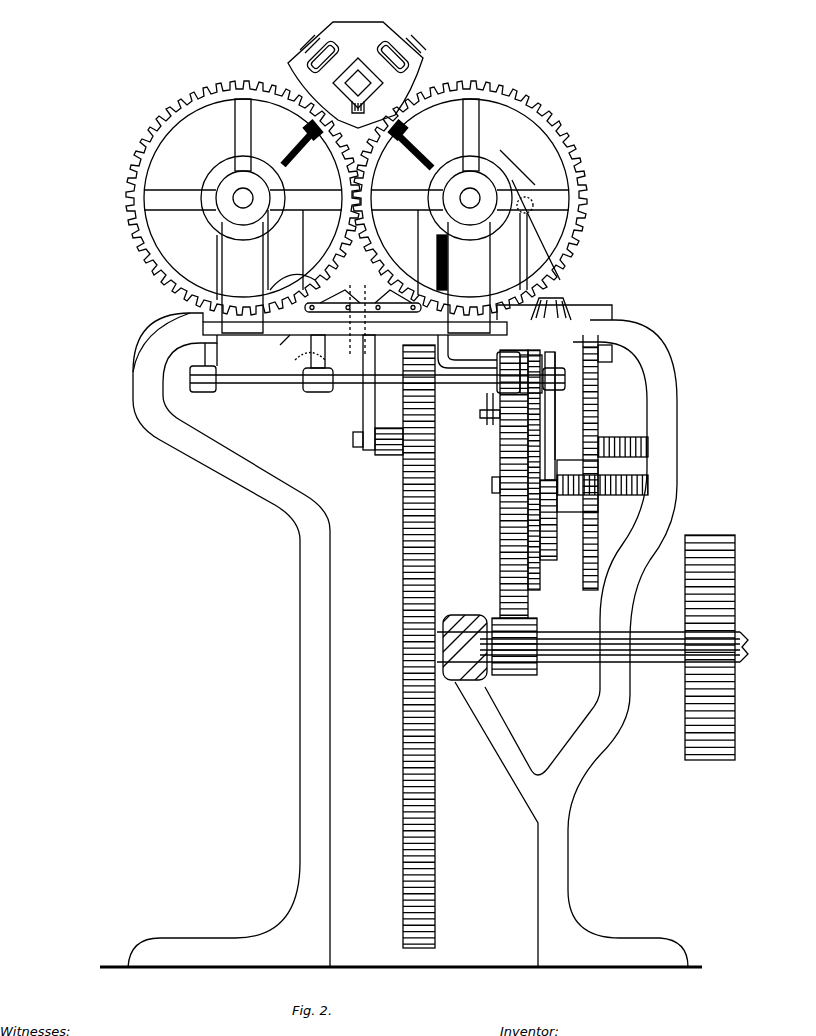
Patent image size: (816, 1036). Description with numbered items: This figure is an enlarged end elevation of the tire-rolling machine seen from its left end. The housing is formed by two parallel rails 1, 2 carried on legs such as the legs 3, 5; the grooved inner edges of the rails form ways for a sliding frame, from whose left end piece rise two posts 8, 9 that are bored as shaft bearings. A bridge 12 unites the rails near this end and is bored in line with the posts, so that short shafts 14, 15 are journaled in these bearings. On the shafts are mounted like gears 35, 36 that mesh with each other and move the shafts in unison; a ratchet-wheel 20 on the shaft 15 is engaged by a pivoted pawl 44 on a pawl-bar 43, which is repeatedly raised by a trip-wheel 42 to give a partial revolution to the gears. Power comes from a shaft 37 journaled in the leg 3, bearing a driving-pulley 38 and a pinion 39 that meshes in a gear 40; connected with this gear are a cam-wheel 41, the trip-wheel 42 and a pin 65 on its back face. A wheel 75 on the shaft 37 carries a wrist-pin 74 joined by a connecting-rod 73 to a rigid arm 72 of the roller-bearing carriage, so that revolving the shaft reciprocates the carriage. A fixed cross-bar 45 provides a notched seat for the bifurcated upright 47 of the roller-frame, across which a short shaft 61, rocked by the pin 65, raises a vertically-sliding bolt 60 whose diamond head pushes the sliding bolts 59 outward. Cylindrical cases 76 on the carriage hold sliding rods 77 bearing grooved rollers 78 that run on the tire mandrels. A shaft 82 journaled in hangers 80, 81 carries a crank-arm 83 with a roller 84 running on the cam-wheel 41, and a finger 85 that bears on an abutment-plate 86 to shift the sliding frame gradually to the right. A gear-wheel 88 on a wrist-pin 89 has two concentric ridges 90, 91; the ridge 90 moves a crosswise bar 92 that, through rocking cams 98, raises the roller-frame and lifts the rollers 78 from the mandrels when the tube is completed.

The rail 1 is at (363, 328).
The rail 2 is at (161, 342).
The leg 3 is at (640, 568).
The leg 5 is at (300, 533).
The post 8 is at (242, 277).
The post 9 is at (463, 277).
The bridge 12 is at (255, 198).
The short shaft 14 is at (238, 208).
The short shaft 15 is at (468, 208).
The ratchet-wheel 20 is at (500, 175).
The gear 35 is at (130, 199).
The gear 36 is at (481, 198).
The shaft 37 is at (592, 659).
The driving-pulley 38 is at (710, 657).
The pinion 39 is at (488, 650).
The gear 40 is at (500, 540).
The cam-wheel 41 is at (541, 588).
The trip-wheel 42 is at (556, 551).
The pawl-bar 43 is at (562, 298).
The pawl 44 is at (533, 211).
The cross-bar 45 is at (266, 255).
The bifurcated upright 47 is at (352, 22).
The sliding bolt 59 is at (363, 62).
The vertically-sliding bolt 60 is at (368, 105).
The short shaft 61 is at (467, 351).
The pin 65 is at (480, 409).
The rigid arm 72 is at (372, 392).
The connecting-rod 73 is at (372, 428).
The wrist-pin 74 is at (346, 439).
The wheel 75 is at (407, 646).
The hollow cylindrical case 76 is at (300, 126).
The sliding rod 77 is at (362, 150).
The grooved roller 78 is at (281, 347).
The hanger 80 is at (203, 376).
The hanger 81 is at (497, 352).
The shaft 82 is at (377, 390).
The crank-arm 83 is at (557, 425).
The roller 84 is at (500, 465).
The finger 85 is at (325, 356).
The abutment-plate 86 is at (306, 352).
The gear-wheel 88 is at (598, 535).
The wrist-pin 89 is at (602, 458).
The ridge 90 is at (603, 429).
The ridge 91 is at (600, 371).
The bar 92 is at (596, 308).
The rocking cam 98 is at (363, 320).